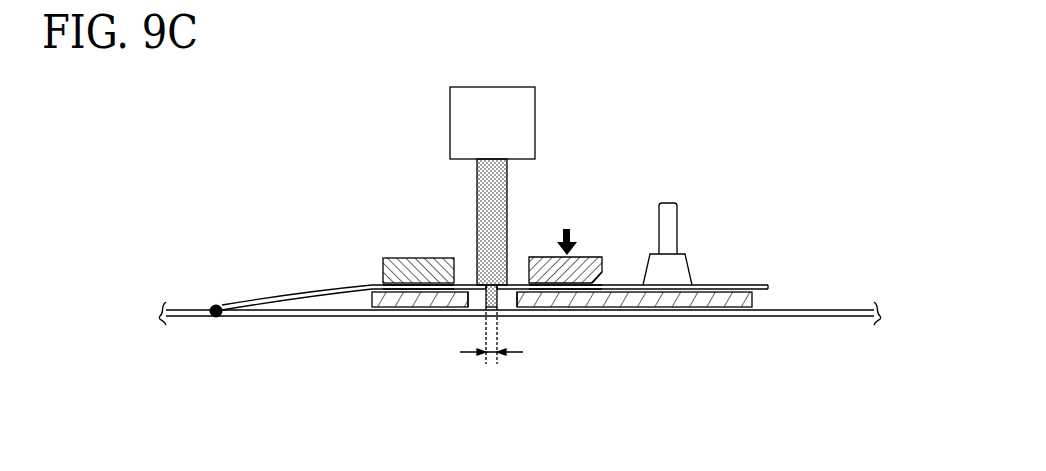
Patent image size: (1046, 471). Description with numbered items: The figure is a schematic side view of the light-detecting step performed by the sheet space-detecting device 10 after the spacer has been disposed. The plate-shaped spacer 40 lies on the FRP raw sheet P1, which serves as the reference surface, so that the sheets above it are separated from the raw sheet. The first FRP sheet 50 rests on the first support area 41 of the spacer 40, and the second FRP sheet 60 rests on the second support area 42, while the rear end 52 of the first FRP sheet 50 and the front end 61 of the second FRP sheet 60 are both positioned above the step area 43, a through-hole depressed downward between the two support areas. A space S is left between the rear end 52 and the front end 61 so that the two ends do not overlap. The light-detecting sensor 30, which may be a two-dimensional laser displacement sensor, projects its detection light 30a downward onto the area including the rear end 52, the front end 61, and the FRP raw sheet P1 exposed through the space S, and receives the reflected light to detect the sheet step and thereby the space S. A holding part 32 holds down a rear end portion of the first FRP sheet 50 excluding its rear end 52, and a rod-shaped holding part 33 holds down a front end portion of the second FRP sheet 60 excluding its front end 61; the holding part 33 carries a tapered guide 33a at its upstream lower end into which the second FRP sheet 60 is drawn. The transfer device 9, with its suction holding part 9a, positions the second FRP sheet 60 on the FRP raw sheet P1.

The sheet space-detecting device 10 is at (500, 181).
The light-detecting sensor 30 is at (535, 123).
The detection light 30a is at (477, 186).
The holding part 32 is at (398, 257).
The holding part 33 is at (582, 257).
The guide 33a is at (601, 276).
The spacer 40 is at (571, 309).
The first support area 41 is at (412, 287).
The second support area 42 is at (547, 287).
The step area 43 is at (481, 300).
The first FRP sheet 50 is at (323, 287).
The rear end 52 is at (486, 283).
The second FRP sheet 60 is at (627, 285).
The front end 61 is at (497, 283).
The transfer device 9 is at (722, 238).
The holding part 9a is at (677, 232).
The FRP raw sheet P1 is at (408, 318).
The space S is at (491, 353).